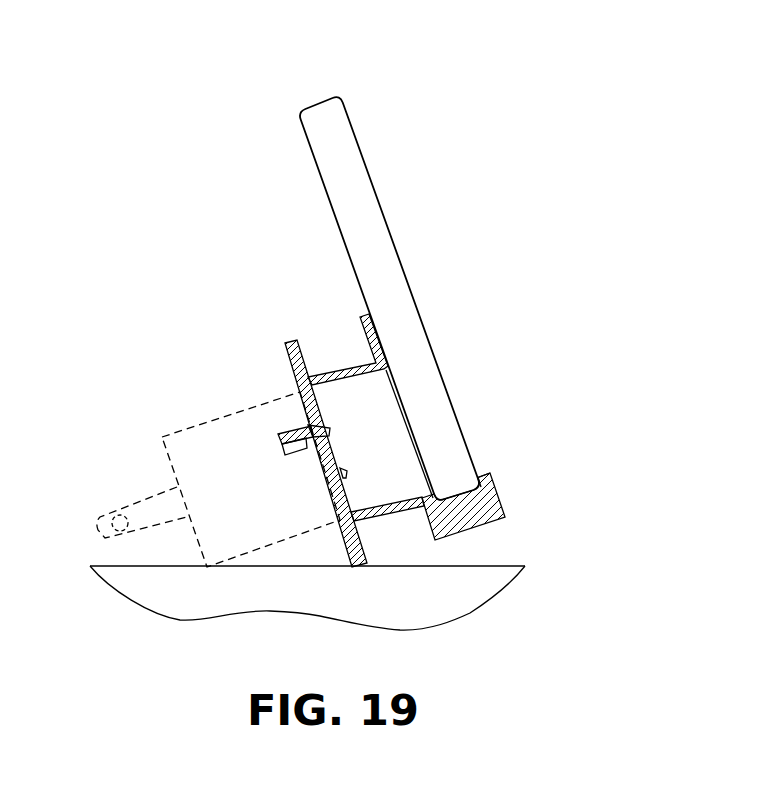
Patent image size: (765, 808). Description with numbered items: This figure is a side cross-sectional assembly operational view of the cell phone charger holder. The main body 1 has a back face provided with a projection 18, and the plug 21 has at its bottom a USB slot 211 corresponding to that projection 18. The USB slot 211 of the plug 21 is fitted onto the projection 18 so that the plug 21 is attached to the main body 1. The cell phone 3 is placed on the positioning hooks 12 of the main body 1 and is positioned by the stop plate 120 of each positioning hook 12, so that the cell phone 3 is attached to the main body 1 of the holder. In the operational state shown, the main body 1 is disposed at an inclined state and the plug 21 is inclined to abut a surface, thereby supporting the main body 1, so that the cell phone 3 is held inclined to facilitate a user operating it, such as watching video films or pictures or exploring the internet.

The main body 1 is at (320, 350).
The cell phone 3 is at (377, 245).
The positioning hook 12 is at (486, 523).
The stop plate 120 is at (477, 453).
The projection 18 is at (288, 440).
The plug 21 is at (202, 420).
The USB slot 211 is at (291, 431).